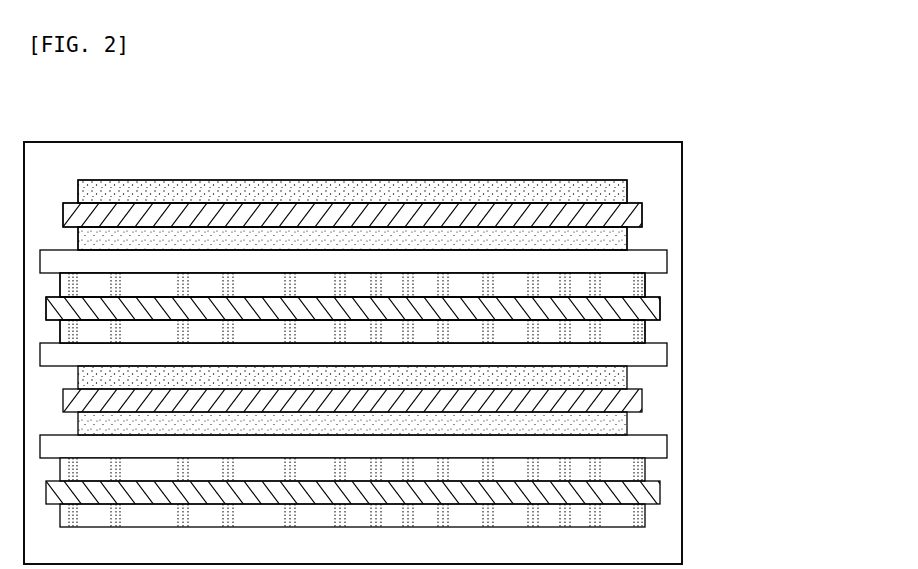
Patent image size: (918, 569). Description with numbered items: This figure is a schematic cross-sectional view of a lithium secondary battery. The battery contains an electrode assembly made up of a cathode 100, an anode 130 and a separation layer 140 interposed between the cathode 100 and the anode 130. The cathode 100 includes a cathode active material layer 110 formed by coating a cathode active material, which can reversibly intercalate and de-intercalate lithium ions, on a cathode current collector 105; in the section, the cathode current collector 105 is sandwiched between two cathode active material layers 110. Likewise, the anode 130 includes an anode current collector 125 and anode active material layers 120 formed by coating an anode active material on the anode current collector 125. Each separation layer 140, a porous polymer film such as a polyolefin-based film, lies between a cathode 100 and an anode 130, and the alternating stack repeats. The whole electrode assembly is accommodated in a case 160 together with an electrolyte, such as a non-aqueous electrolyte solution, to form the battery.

The cathode 100 is at (766, 186).
The cathode current collector 105 is at (642, 215).
The cathode active material layer 110 is at (627, 192).
The anode active material layer 120 is at (645, 284).
The anode current collector 125 is at (660, 308).
The anode 130 is at (766, 278).
The separation layer 140 is at (544, 258).
The case 160 is at (682, 493).